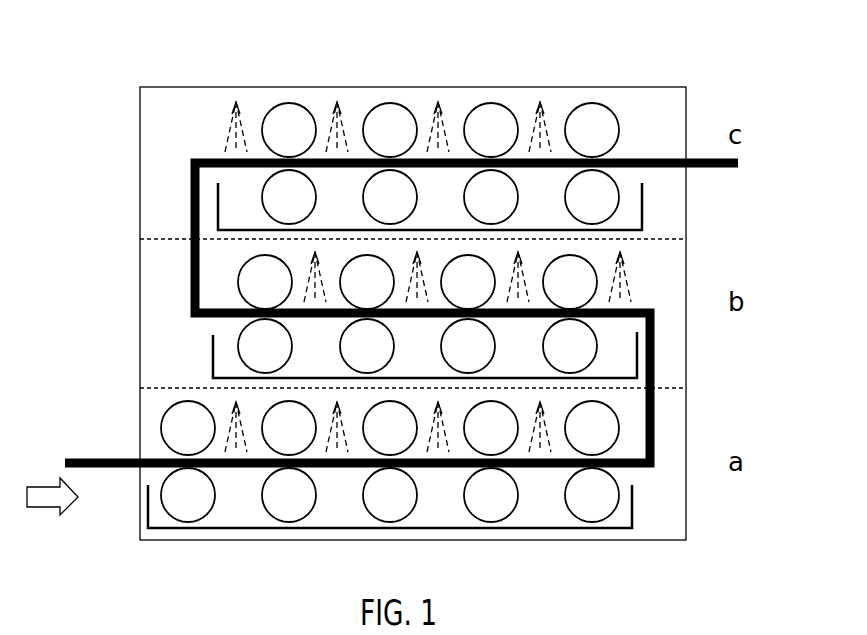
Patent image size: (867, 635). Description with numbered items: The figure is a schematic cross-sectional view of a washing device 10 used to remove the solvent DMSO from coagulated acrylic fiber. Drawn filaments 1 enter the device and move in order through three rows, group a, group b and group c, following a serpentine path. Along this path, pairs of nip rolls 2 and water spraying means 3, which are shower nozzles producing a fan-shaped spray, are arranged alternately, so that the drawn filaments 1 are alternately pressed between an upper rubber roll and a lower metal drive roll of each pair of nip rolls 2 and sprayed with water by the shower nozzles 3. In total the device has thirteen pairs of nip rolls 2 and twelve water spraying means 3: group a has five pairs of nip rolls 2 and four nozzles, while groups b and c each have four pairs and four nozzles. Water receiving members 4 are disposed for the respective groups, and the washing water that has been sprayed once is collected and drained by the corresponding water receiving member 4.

The washing device 10 is at (617, 87).
The drawn filaments 1 is at (193, 197).
The nip rolls 2 is at (190, 505).
The water spraying means 3 is at (222, 118).
The water receiving members 4 is at (213, 352).